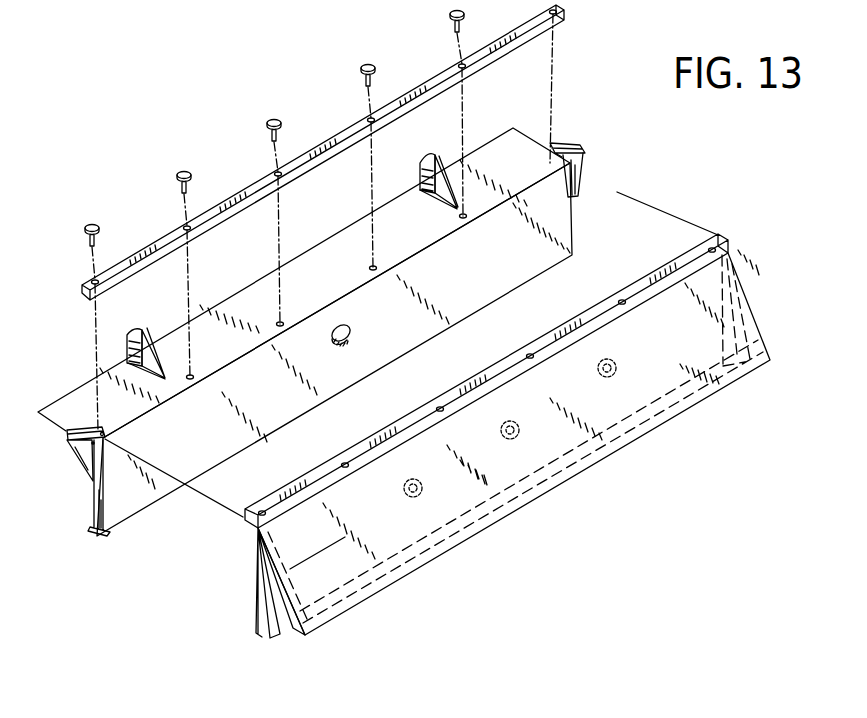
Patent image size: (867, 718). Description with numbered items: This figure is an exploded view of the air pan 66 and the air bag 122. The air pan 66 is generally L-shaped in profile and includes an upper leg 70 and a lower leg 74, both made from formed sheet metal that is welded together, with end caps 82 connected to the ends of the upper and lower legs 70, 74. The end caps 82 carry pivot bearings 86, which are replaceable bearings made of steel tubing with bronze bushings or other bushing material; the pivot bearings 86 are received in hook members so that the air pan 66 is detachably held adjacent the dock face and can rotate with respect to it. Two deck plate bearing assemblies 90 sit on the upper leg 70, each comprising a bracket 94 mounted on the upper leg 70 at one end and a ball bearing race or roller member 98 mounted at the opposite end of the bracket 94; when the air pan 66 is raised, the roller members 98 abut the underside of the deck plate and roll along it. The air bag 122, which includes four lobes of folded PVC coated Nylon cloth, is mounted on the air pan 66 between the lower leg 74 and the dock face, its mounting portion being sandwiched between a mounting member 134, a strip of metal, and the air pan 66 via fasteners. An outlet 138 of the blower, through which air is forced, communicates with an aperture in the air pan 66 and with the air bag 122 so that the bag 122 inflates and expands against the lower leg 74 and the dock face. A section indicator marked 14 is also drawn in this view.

The mounting member 134 is at (342, 130).
The upper leg 70 is at (347, 248).
The lower leg 74 is at (463, 293).
The outlet 138 is at (336, 346).
The roller member 98 is at (276, 235).
The bracket 94 is at (127, 344).
The deck plate bearing assembly 90 is at (159, 326).
The end cap 82 is at (353, 318).
The pivot bearing 86 is at (112, 437).
The air pan 66 is at (583, 226).
The air bag 122 is at (610, 407).
The section line 14 is at (618, 363).